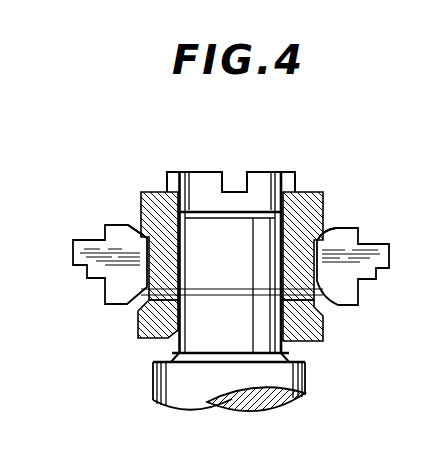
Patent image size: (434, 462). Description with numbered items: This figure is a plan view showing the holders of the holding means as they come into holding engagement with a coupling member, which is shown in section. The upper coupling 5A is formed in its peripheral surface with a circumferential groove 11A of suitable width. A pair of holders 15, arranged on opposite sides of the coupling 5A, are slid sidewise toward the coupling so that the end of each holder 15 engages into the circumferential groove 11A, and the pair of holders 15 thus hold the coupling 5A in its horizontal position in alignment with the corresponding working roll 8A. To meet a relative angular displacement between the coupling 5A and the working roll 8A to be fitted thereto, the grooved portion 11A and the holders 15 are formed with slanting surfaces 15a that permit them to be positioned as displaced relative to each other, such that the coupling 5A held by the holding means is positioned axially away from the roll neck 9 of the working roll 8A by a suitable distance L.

The roll neck 9 is at (225, 289).
The suitable distance L is at (223, 294).
The upper coupling 5A is at (140, 325).
The circumferential groove 11A is at (330, 308).
The working roll 8A is at (305, 384).
The holder 15 is at (115, 295).
The slanting surface 15a is at (137, 229).